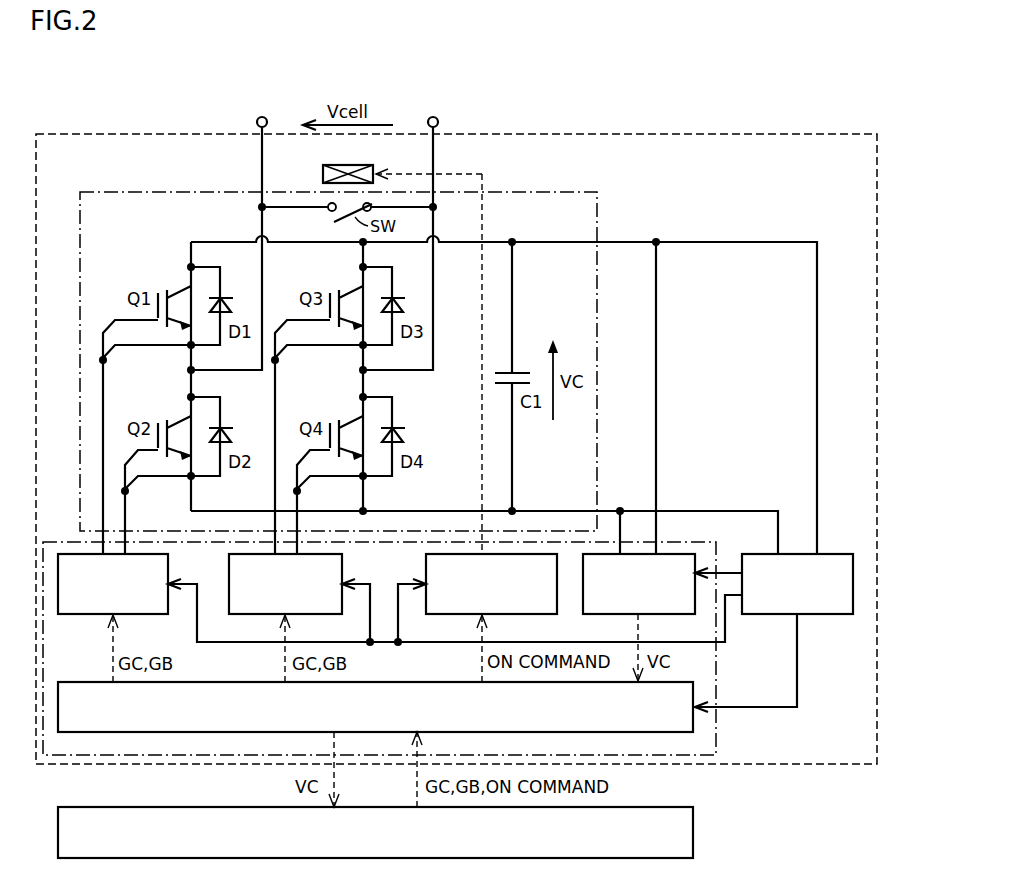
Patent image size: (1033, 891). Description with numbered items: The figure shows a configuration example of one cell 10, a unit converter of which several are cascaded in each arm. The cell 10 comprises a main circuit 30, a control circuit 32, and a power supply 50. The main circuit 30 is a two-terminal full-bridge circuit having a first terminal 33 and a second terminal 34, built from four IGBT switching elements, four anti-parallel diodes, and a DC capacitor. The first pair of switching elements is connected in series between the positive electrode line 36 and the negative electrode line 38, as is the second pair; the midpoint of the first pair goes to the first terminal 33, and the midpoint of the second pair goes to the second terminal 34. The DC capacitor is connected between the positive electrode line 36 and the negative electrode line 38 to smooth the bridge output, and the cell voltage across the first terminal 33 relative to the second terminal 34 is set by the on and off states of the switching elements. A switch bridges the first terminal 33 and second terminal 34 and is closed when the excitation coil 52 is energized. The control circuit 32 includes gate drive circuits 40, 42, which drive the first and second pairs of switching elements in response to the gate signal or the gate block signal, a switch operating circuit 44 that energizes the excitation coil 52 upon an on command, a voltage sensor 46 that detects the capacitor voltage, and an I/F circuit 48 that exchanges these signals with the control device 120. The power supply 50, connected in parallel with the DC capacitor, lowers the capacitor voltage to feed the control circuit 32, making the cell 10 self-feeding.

The cell 10 is at (828, 134).
The main circuit 30 is at (555, 192).
The control circuit 32 is at (717, 724).
The first terminal 33 is at (257, 116).
The second terminal 34 is at (438, 116).
The positive electrode line 36 is at (737, 242).
The negative electrode line 38 is at (715, 511).
The gate drive circuit 40 is at (133, 614).
The gate drive circuit 42 is at (310, 614).
The switch operating circuit 44 is at (503, 614).
The voltage sensor 46 is at (660, 614).
The I/F circuit 48 is at (650, 732).
The power supply 50 is at (818, 614).
The excitation coil 52 is at (357, 165).
The control device 120 is at (650, 858).